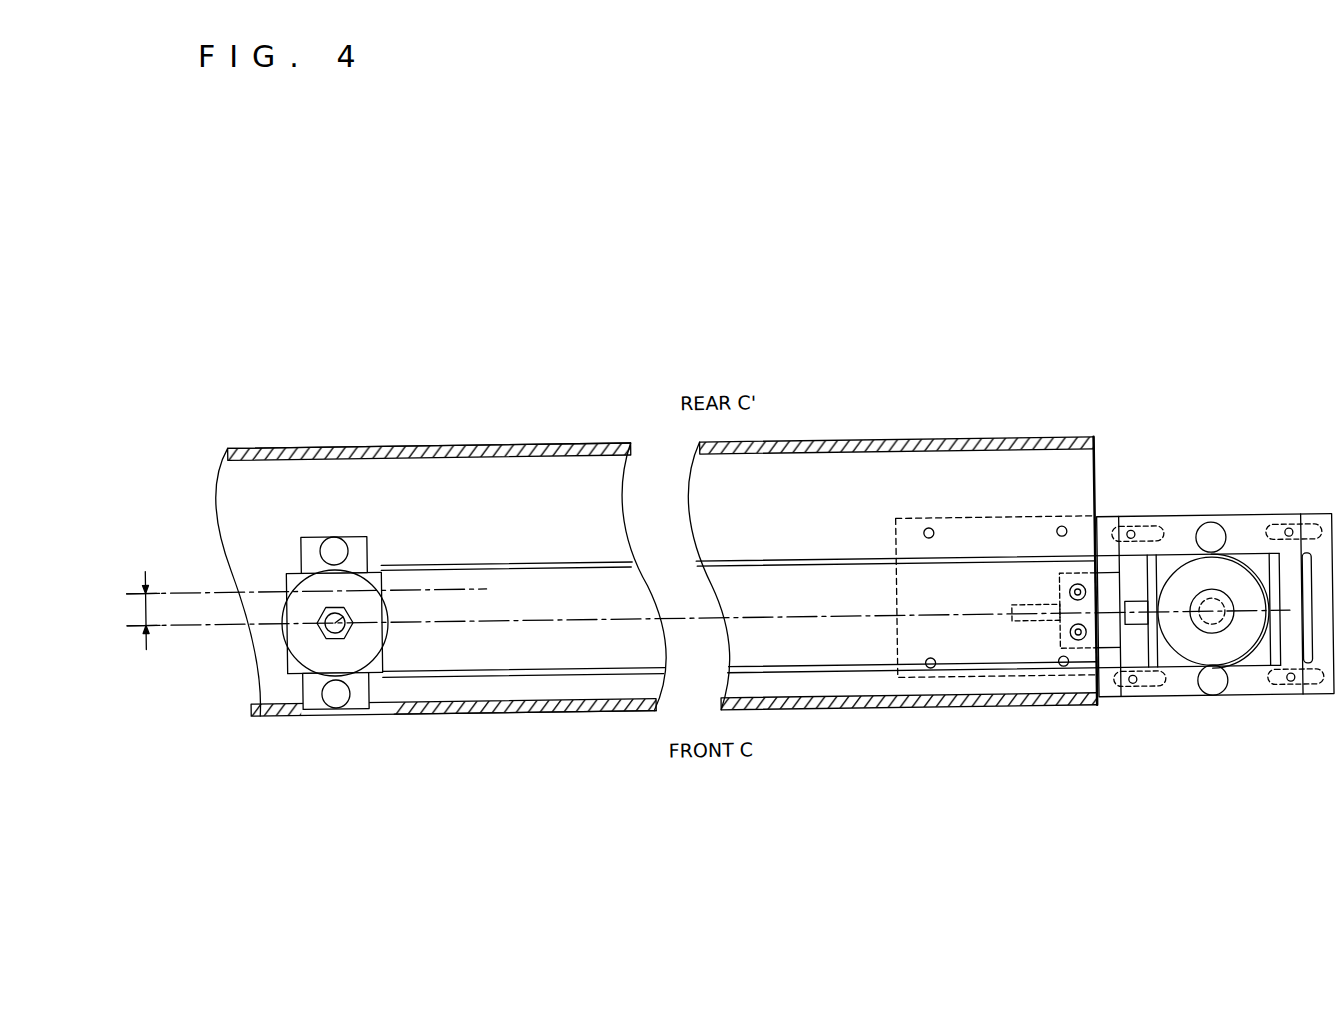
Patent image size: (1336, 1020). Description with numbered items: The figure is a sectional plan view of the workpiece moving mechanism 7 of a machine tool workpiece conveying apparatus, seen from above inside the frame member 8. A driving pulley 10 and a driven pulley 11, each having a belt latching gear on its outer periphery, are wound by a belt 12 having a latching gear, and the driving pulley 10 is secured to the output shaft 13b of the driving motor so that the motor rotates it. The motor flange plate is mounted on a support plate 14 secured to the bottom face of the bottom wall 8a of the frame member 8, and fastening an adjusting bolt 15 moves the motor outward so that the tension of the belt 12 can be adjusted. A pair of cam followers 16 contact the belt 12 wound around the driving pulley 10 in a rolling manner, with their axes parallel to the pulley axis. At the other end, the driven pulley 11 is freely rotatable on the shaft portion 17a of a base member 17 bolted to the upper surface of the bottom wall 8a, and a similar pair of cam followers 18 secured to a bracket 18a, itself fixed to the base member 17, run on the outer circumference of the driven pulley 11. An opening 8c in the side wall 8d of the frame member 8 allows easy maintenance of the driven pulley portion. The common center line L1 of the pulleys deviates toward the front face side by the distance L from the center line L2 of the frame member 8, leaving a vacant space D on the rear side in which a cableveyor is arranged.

The workpiece moving mechanism 7 is at (845, 550).
The frame member 8 is at (578, 450).
The bottom wall 8a is at (486, 690).
The opening 8c is at (388, 716).
The side wall 8d is at (578, 716).
The driving pulley 10 is at (1232, 592).
The driven pulley 11 is at (383, 574).
The belt 12 is at (781, 568).
The output shaft 13b is at (1200, 611).
The support plate 14 is at (978, 526).
The adjusting bolt 15 is at (1017, 612).
The cam followers 16 is at (1221, 535).
The base member 17 is at (376, 660).
The shaft portion 17a is at (352, 617).
The cam followers 18 is at (308, 537).
The bracket 18a is at (368, 538).
The vacant space D is at (535, 506).
The deviation amount L is at (143, 607).
The center line of the driving and driven pulleys L1 is at (200, 625).
The center line of the frame member L2 is at (158, 590).